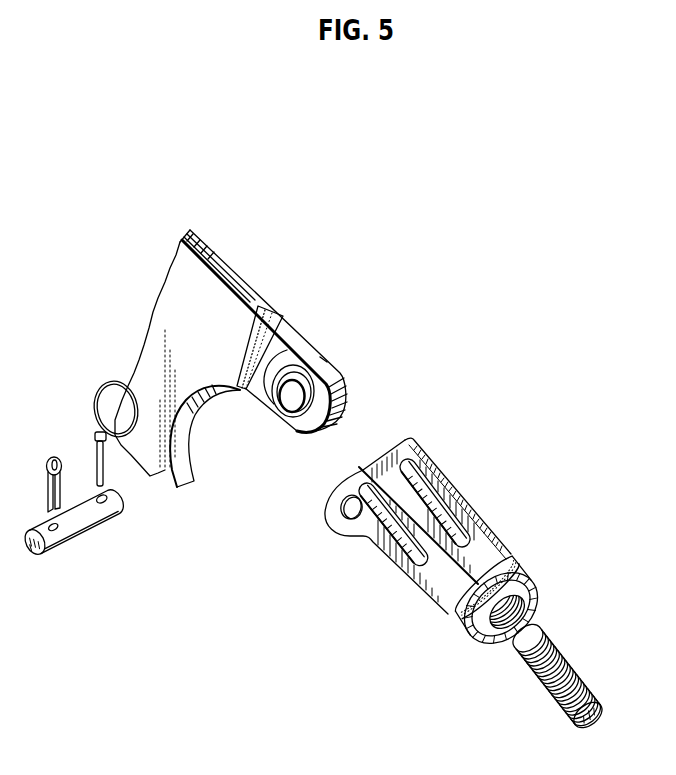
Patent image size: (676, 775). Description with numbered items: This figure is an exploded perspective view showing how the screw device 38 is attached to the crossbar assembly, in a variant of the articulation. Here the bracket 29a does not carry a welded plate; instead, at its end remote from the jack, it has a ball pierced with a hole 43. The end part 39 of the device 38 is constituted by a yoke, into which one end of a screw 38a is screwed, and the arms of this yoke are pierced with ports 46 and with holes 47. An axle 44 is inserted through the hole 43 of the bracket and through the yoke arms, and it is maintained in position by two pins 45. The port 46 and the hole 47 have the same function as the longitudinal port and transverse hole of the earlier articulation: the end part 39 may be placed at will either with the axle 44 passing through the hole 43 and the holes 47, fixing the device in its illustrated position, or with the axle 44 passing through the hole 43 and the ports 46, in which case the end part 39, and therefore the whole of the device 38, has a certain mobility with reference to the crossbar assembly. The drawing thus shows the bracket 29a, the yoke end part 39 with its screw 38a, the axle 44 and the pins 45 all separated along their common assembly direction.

The bracket 29a is at (240, 284).
The hole 43 is at (297, 400).
The pin 45 is at (96, 465).
The axle 44 is at (67, 540).
The end part 39 is at (442, 561).
The port 46 is at (418, 552).
The hole 47 is at (342, 513).
The device 38 is at (539, 617).
The screw 38a is at (631, 640).